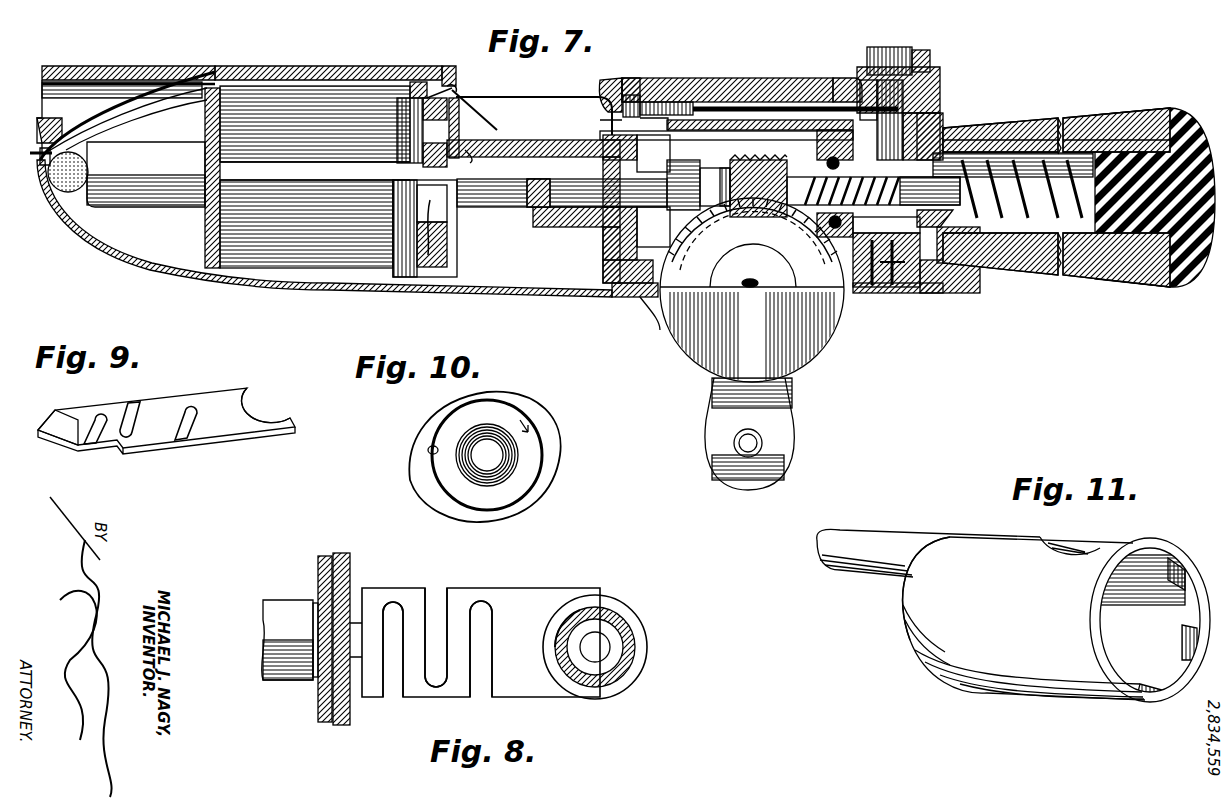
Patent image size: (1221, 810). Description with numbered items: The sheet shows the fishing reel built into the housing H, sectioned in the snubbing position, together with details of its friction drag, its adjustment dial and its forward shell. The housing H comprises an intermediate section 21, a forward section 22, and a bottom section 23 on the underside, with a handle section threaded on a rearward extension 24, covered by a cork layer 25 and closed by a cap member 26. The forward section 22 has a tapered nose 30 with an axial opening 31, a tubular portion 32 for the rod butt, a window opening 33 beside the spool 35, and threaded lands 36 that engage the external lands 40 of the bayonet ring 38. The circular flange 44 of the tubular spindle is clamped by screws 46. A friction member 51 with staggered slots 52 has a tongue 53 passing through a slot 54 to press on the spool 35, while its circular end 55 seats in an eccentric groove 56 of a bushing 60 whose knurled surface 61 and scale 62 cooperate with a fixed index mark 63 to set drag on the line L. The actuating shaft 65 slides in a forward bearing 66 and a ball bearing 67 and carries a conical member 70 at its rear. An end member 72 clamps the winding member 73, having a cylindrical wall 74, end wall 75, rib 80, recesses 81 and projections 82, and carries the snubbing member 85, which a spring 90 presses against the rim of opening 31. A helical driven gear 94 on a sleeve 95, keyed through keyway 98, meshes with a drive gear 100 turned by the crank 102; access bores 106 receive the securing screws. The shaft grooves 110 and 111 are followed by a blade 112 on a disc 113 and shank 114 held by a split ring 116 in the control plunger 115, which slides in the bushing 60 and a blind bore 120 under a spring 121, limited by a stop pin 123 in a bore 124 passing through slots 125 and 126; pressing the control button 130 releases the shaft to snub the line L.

In FIG. 7, the intermediate housing section 21 is at (712, 78).
In FIG. 7, the forward housing section 22 is at (200, 66).
In FIG. 11, the forward housing section 22 is at (998, 698).
In FIG. 7, the bottom housing section 23 is at (660, 312).
In FIG. 7, the rearward extension 24 is at (1005, 128).
In FIG. 7, the outer layer 25 is at (1082, 118).
In FIG. 7, the cap member 26 is at (1158, 296).
In FIG. 7, the tapered nose 30 is at (65, 240).
In FIG. 11, the tapered nose 30 is at (900, 600).
In FIG. 7, the axial opening 31 is at (42, 167).
In FIG. 7, the tubular portion 32 is at (52, 66).
In FIG. 11, the tubular portion 32 is at (878, 540).
In FIG. 7, the opening 33 is at (452, 88).
In FIG. 11, the opening 33 is at (1108, 545).
In FIG. 7, the spool 35 is at (515, 226).
In FIG. 8, the spool 35 is at (275, 598).
In FIG. 7, the lands 36 is at (614, 80).
In FIG. 11, the lands 36 is at (1165, 560).
In FIG. 7, the bayonet ring 38 is at (635, 78).
In FIG. 7, the external lands 40 is at (610, 300).
In FIG. 8, the circular flange 44 is at (340, 726).
In FIG. 7, the screws 46 is at (668, 95).
In FIG. 7, the friction member 51 is at (684, 175).
In FIG. 9, the friction member 51 is at (165, 449).
In FIG. 8, the friction member 51 is at (515, 590).
In FIG. 9, the staggered slots 52 is at (110, 410).
In FIG. 8, the staggered slots 52 is at (440, 594).
In FIG. 7, the tongue 53 is at (606, 122).
In FIG. 9, the tongue 53 is at (50, 440).
In FIG. 8, the tongue 53 is at (356, 697).
In FIG. 7, the slot 54 is at (636, 209).
In FIG. 8, the slot 54 is at (350, 615).
In FIG. 9, the circular end 55 is at (240, 406).
In FIG. 8, the circular end 55 is at (580, 610).
In FIG. 7, the eccentric circumferential groove 56 is at (970, 128).
In FIG. 8, the eccentric circumferential groove 56 is at (605, 608).
In FIG. 7, the bushing 60 is at (943, 78).
In FIG. 8, the bushing 60 is at (640, 600).
In FIG. 7, the knurled peripheral surface 61 is at (943, 115).
In FIG. 10, the scale 62 is at (495, 506).
In FIG. 10, the fixed index mark 63 is at (428, 450).
In FIG. 7, the actuating shaft 65 is at (560, 228).
In FIG. 7, the forward bearing 66 is at (470, 150).
In FIG. 7, the ball bearing 67 is at (826, 145).
In FIG. 7, the conical member 70 is at (935, 226).
In FIG. 7, the end member 72 is at (150, 208).
In FIG. 7, the winding member 73 is at (297, 275).
In FIG. 7, the cylindrical wall 74 is at (340, 273).
In FIG. 7, the end wall 75 is at (205, 242).
In FIG. 7, the circumferential rib 80 is at (395, 278).
In FIG. 7, the recesses 81 is at (420, 82).
In FIG. 7, the projections 82 is at (460, 95).
In FIG. 7, the snubbing member 85 is at (75, 194).
In FIG. 7, the spring 90 is at (1003, 270).
In FIG. 7, the helical driven gear 94 is at (800, 148).
In FIG. 7, the sleeve 95 is at (712, 168).
In FIG. 7, the longitudinal keyway 98 is at (814, 166).
In FIG. 7, the helical drive gear 100 is at (708, 268).
In FIG. 7, the crank 102 is at (790, 402).
In FIG. 7, the bores 106 is at (747, 288).
In FIG. 7, the helical groove 110 is at (873, 183).
In FIG. 7, the shorter helical groove 111 is at (752, 230).
In FIG. 7, the follower blade 112 is at (885, 223).
In FIG. 7, the supporting disc 113 is at (893, 288).
In FIG. 7, the shank 114 is at (868, 288).
In FIG. 7, the control plunger 115 is at (925, 47).
In FIG. 10, the control plunger 115 is at (520, 452).
In FIG. 8, the control plunger 115 is at (612, 650).
In FIG. 7, the split retaining ring 116 is at (882, 288).
In FIG. 7, the blind bore 120 is at (940, 293).
In FIG. 7, the spring 121 is at (819, 275).
In FIG. 7, the stop pin 123 is at (782, 106).
In FIG. 7, the longitudinal bore 124 is at (742, 120).
In FIG. 7, the slot 125 is at (832, 102).
In FIG. 7, the slot 126 is at (850, 92).
In FIG. 7, the control button 130 is at (870, 50).
In FIG. 10, the control button 130 is at (470, 440).
In FIG. 7, the housing H is at (340, 66).
In FIG. 7, the fishing line L is at (488, 95).